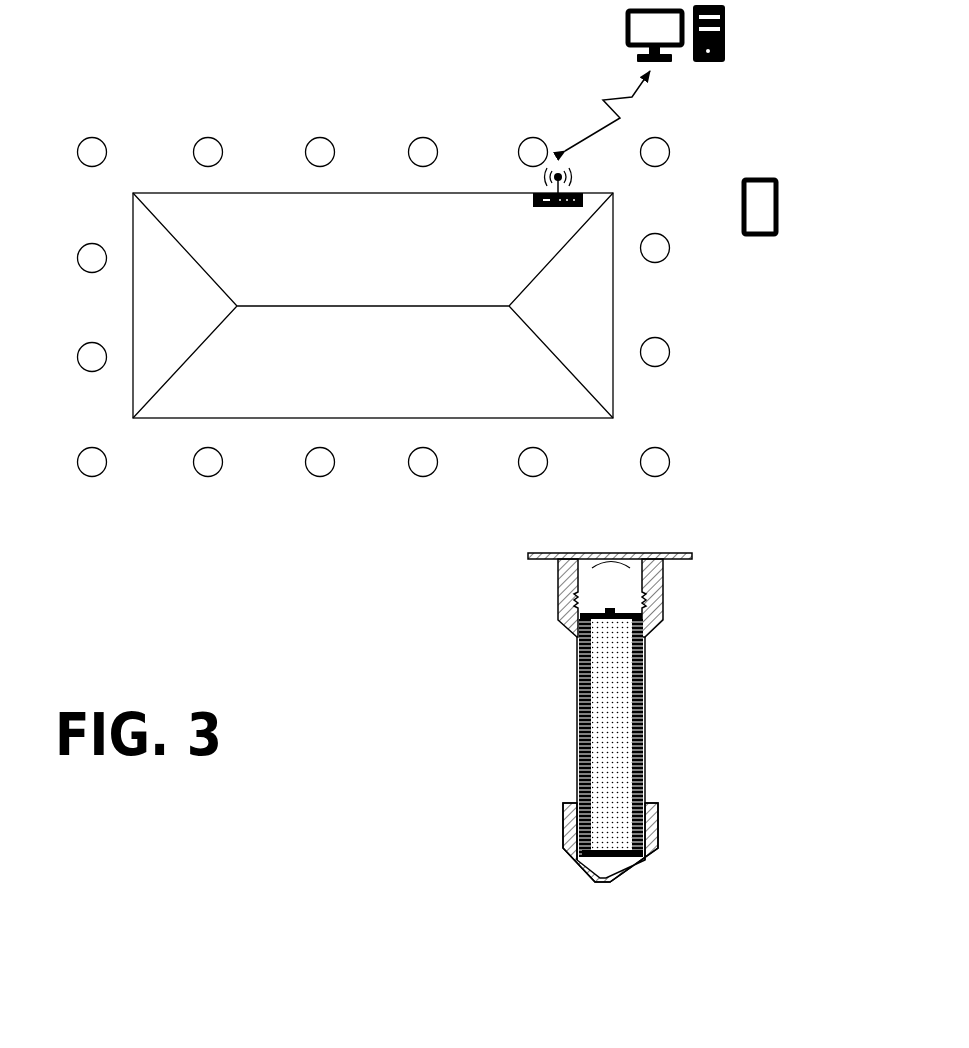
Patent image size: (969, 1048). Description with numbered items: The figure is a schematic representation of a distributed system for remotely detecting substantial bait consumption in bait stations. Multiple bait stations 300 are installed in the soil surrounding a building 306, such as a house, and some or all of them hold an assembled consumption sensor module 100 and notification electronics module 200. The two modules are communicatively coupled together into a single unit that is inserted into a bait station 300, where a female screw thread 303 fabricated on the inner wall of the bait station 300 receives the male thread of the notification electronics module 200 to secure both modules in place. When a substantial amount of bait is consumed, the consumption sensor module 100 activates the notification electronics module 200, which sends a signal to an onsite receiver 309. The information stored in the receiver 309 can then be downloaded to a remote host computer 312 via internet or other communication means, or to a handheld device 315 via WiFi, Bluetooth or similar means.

The bait station 300 is at (437, 497).
The building 306 is at (393, 360).
The receiver 309 is at (546, 222).
The remote host computer 312 is at (735, 47).
The handheld device 315 is at (790, 186).
The notification electronics module 200 is at (631, 588).
The female screw thread 303 is at (565, 603).
The consumption sensor module 100 is at (612, 737).